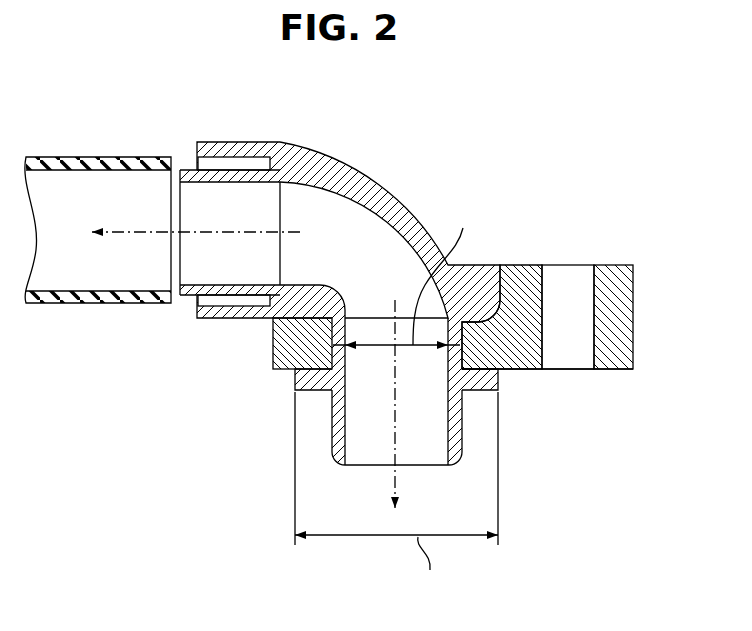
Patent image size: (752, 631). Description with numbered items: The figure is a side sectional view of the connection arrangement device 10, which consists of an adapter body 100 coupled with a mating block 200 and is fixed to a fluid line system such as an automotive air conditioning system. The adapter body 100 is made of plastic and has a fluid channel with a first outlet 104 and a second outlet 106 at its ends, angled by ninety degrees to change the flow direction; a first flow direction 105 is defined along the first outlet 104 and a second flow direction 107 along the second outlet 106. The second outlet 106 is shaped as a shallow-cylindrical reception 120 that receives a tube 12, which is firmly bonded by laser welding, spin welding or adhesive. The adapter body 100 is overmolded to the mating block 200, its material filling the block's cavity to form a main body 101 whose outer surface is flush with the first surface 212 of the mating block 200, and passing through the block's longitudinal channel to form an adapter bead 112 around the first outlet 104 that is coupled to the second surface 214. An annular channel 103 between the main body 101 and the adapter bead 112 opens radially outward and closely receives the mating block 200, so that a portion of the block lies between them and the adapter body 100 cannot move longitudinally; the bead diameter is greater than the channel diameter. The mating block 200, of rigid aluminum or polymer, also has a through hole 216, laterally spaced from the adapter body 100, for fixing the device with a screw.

The connection arrangement device 10 is at (322, 334).
The tube 12 is at (88, 305).
The adapter body 100 is at (346, 165).
The main body 101 is at (273, 336).
The annular channel 103 is at (293, 374).
The first outlet 104 is at (437, 471).
The first flow direction 105 is at (392, 478).
The second outlet 106 is at (197, 206).
The second flow direction 107 is at (205, 235).
The adapter bead 112 is at (313, 393).
The shallow-cylindrical reception 120 is at (247, 162).
The mating block 200 is at (585, 318).
The first surface 212 is at (522, 262).
The second surface 214 is at (522, 372).
The through hole 216 is at (582, 335).